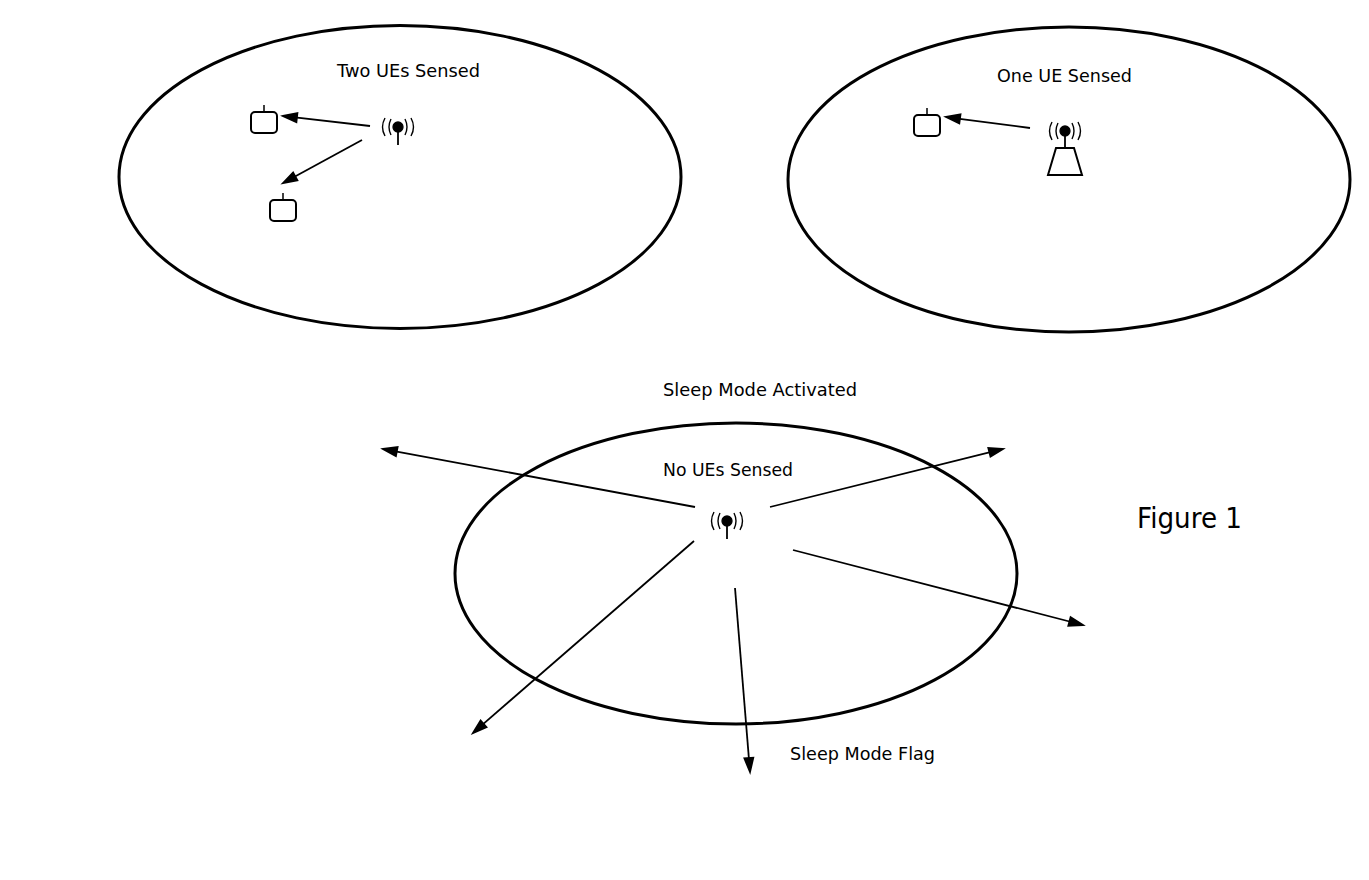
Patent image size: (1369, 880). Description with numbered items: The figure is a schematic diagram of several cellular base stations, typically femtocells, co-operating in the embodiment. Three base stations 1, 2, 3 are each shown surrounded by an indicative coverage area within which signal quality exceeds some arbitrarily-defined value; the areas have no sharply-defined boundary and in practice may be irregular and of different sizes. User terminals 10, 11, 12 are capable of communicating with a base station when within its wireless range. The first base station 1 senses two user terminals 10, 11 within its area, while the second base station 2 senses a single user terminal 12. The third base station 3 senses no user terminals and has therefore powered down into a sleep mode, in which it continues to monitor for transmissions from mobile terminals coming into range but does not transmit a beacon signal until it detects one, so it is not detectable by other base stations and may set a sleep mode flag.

The base station 1 is at (418, 152).
The base station 2 is at (1080, 155).
The base station 3 is at (747, 546).
The user terminal 10 is at (237, 130).
The user terminal 11 is at (282, 235).
The user terminal 12 is at (920, 152).